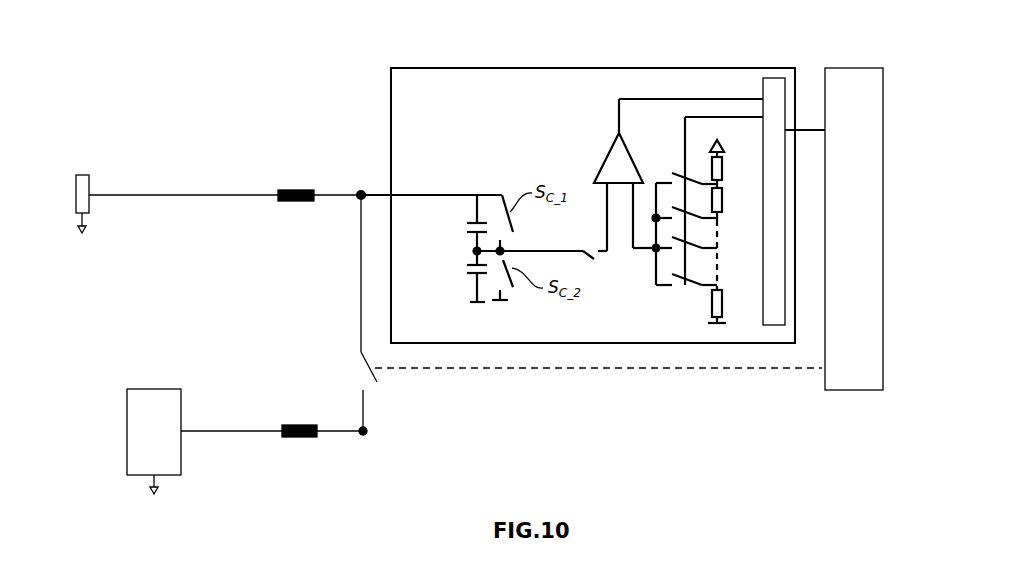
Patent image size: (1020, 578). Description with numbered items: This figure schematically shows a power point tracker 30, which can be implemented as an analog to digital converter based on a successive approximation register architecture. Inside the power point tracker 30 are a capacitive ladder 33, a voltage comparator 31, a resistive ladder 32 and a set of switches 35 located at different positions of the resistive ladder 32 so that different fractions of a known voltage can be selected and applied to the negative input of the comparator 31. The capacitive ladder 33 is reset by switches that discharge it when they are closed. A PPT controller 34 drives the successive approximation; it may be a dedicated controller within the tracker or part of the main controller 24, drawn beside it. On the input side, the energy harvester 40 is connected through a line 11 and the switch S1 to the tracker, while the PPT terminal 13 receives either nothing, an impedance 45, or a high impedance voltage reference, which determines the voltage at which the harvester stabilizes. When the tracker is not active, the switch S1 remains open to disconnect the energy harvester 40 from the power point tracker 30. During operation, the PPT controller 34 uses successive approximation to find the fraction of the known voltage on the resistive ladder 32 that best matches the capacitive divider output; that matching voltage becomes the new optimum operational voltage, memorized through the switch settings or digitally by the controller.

The impedance 45 is at (82, 175).
The PPT terminal 13 is at (290, 192).
The power point tracker 30 is at (391, 100).
The voltage comparator 31 is at (603, 152).
The capacitive ladder 33 is at (455, 267).
The switches 35 is at (668, 172).
The resistive ladder 32 is at (728, 203).
The PPT controller 34 is at (780, 80).
The main controller 24 is at (890, 208).
The switch S1 is at (360, 370).
The transmission line segment 11 is at (284, 428).
The energy harvester 40 is at (127, 433).